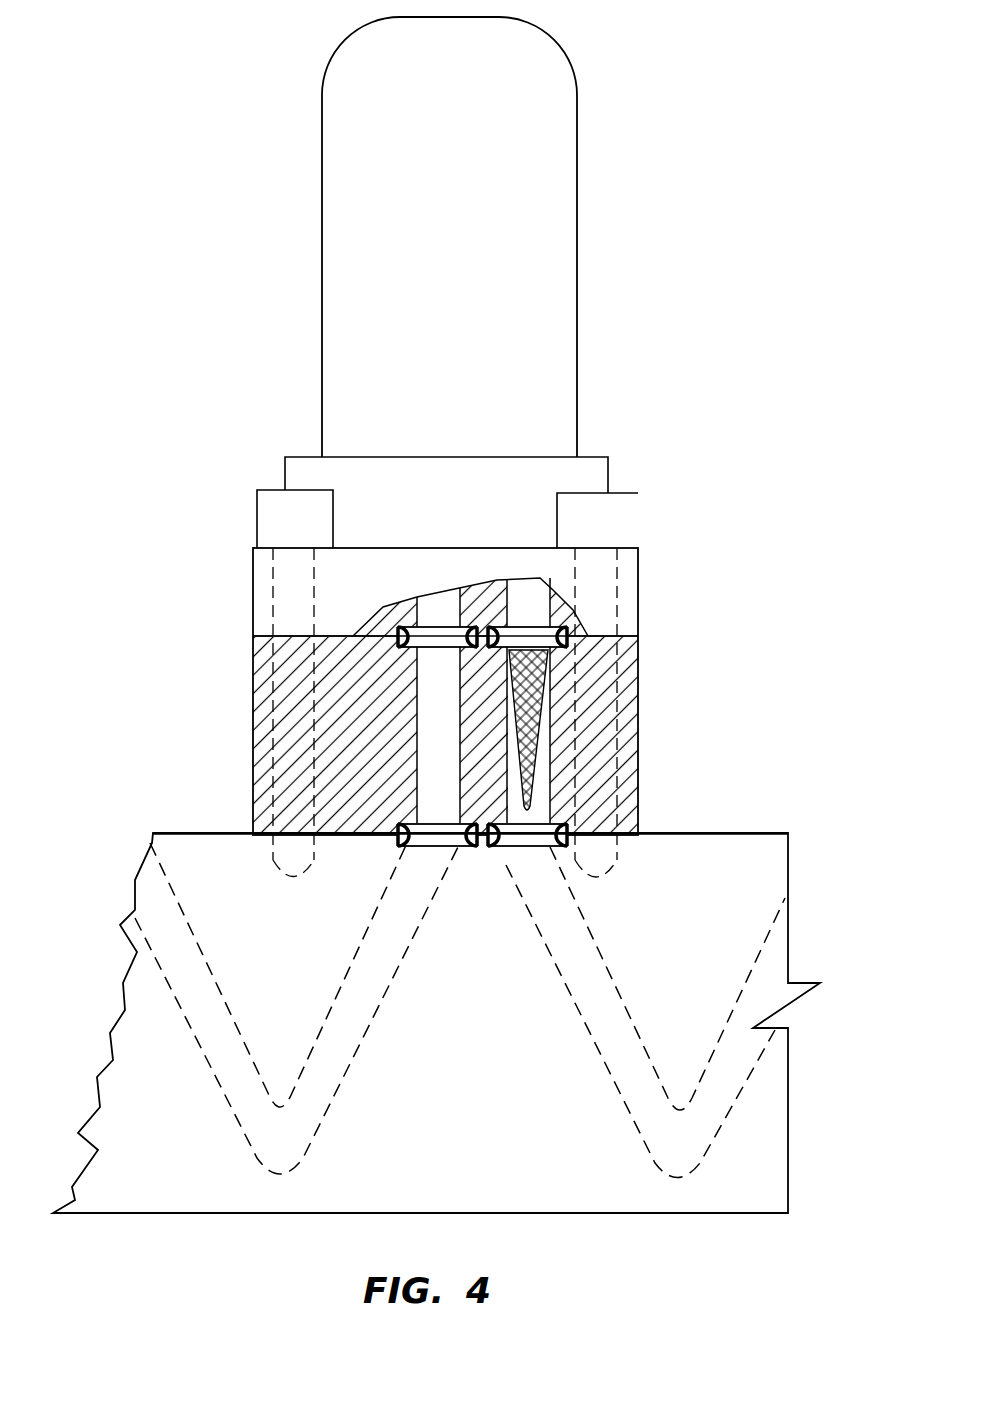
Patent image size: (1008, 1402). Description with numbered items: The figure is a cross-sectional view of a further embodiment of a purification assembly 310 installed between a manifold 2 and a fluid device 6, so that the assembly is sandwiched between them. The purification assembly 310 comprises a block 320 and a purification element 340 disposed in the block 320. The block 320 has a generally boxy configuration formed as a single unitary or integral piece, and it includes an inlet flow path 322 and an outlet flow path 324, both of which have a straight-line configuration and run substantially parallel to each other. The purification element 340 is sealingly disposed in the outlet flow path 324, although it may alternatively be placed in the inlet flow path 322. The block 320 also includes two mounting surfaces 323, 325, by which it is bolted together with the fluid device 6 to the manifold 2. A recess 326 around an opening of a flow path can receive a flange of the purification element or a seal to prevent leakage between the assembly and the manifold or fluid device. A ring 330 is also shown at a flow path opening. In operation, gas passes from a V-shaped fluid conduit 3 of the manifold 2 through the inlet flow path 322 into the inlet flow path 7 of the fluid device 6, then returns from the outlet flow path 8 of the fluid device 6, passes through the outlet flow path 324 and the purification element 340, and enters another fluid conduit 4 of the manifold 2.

The manifold 2 is at (740, 930).
The V-shaped fluid conduit 3 is at (367, 1007).
The fluid conduit 4 is at (606, 1000).
The fluid device 6 is at (563, 165).
The inlet flow path 7 is at (447, 602).
The outlet flow path 8 is at (529, 598).
The purification assembly 310 is at (668, 699).
The block 320 is at (627, 633).
The inlet flow path 322 is at (437, 665).
The mounting surface 323 is at (250, 626).
The outlet flow path 324 is at (543, 807).
The mounting surface 325 is at (249, 850).
The recess 326 is at (392, 628).
The seal ring 330 is at (506, 846).
The purification element 340 is at (530, 774).